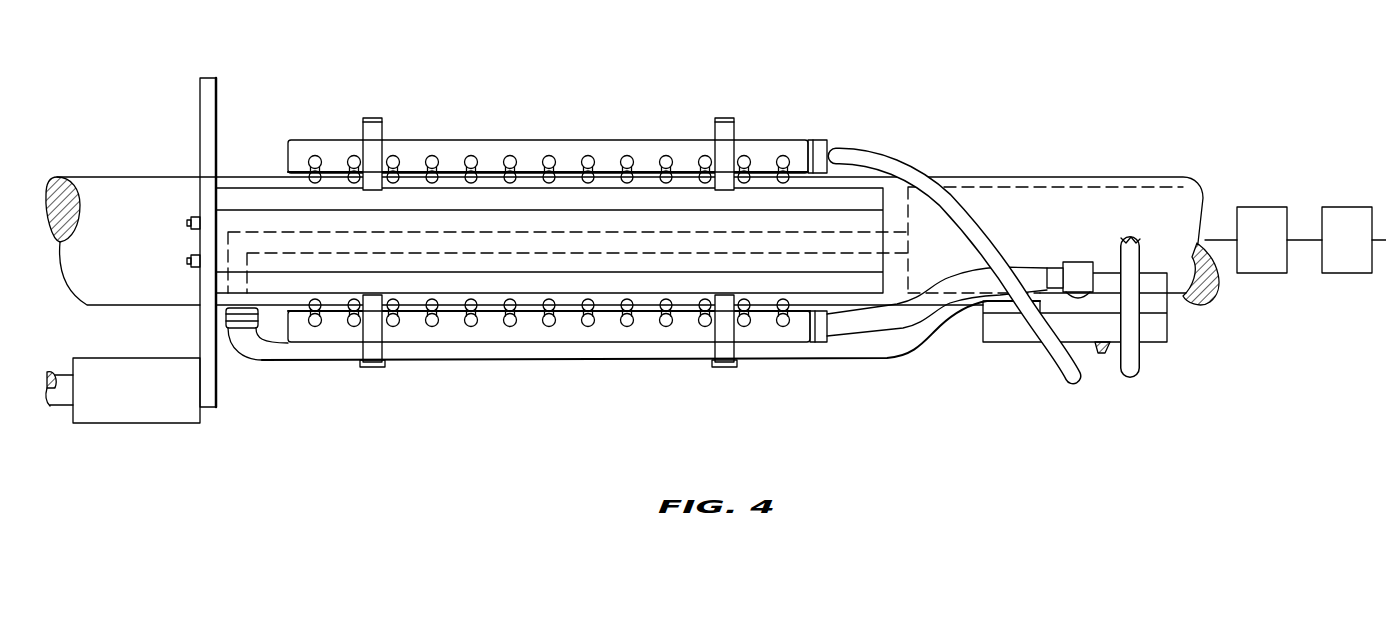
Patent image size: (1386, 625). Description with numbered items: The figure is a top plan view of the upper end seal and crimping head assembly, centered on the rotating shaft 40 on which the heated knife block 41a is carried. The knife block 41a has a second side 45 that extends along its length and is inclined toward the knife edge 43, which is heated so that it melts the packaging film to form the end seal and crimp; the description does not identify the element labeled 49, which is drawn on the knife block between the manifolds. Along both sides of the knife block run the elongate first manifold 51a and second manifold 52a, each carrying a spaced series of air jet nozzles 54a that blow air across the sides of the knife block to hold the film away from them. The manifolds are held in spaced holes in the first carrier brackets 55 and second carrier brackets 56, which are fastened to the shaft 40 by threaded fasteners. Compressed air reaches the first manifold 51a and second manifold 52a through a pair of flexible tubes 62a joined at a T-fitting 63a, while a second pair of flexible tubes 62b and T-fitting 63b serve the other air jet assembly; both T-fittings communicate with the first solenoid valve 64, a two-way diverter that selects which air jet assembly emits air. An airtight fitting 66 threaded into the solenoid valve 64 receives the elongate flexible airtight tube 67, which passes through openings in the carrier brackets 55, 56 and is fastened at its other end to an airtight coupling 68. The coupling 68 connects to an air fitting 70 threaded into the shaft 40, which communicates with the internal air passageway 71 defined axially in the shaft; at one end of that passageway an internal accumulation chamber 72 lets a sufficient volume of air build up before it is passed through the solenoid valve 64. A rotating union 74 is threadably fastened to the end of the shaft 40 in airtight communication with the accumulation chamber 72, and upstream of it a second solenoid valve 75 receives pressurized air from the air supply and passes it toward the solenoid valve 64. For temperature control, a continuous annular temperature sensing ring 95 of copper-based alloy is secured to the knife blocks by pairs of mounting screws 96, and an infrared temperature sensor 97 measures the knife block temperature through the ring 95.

The shaft 40 is at (136, 258).
The knife block 41a is at (848, 200).
The knife edge 43 is at (257, 242).
The second side 45 is at (651, 262).
The upper wall 49 is at (650, 218).
The first manifold 51a is at (567, 333).
The second manifold 52a is at (563, 140).
The air jet nozzles 54a is at (502, 140).
The first carrier brackets 55 is at (372, 367).
The second carrier brackets 56 is at (371, 118).
The flexible tubes 62a is at (958, 208).
The flexible tubes 62b is at (1133, 350).
The T-fitting 63a is at (1097, 347).
The T-fitting 63b is at (1097, 345).
The first solenoid valve 64 is at (1170, 328).
The airtight fitting 66 is at (1078, 268).
The airtight tube 67 is at (870, 350).
The airtight coupling 68 is at (218, 332).
The air fitting 70 is at (247, 308).
The internal air passageway 71 is at (450, 250).
The internal accumulation chamber 72 is at (1217, 288).
The rotating union 74 is at (1278, 252).
The second solenoid valve 75 is at (1363, 252).
The temperature sensing ring 95 is at (207, 86).
The mounting screws 96 is at (189, 262).
The infrared temperature sensor 97 is at (151, 398).